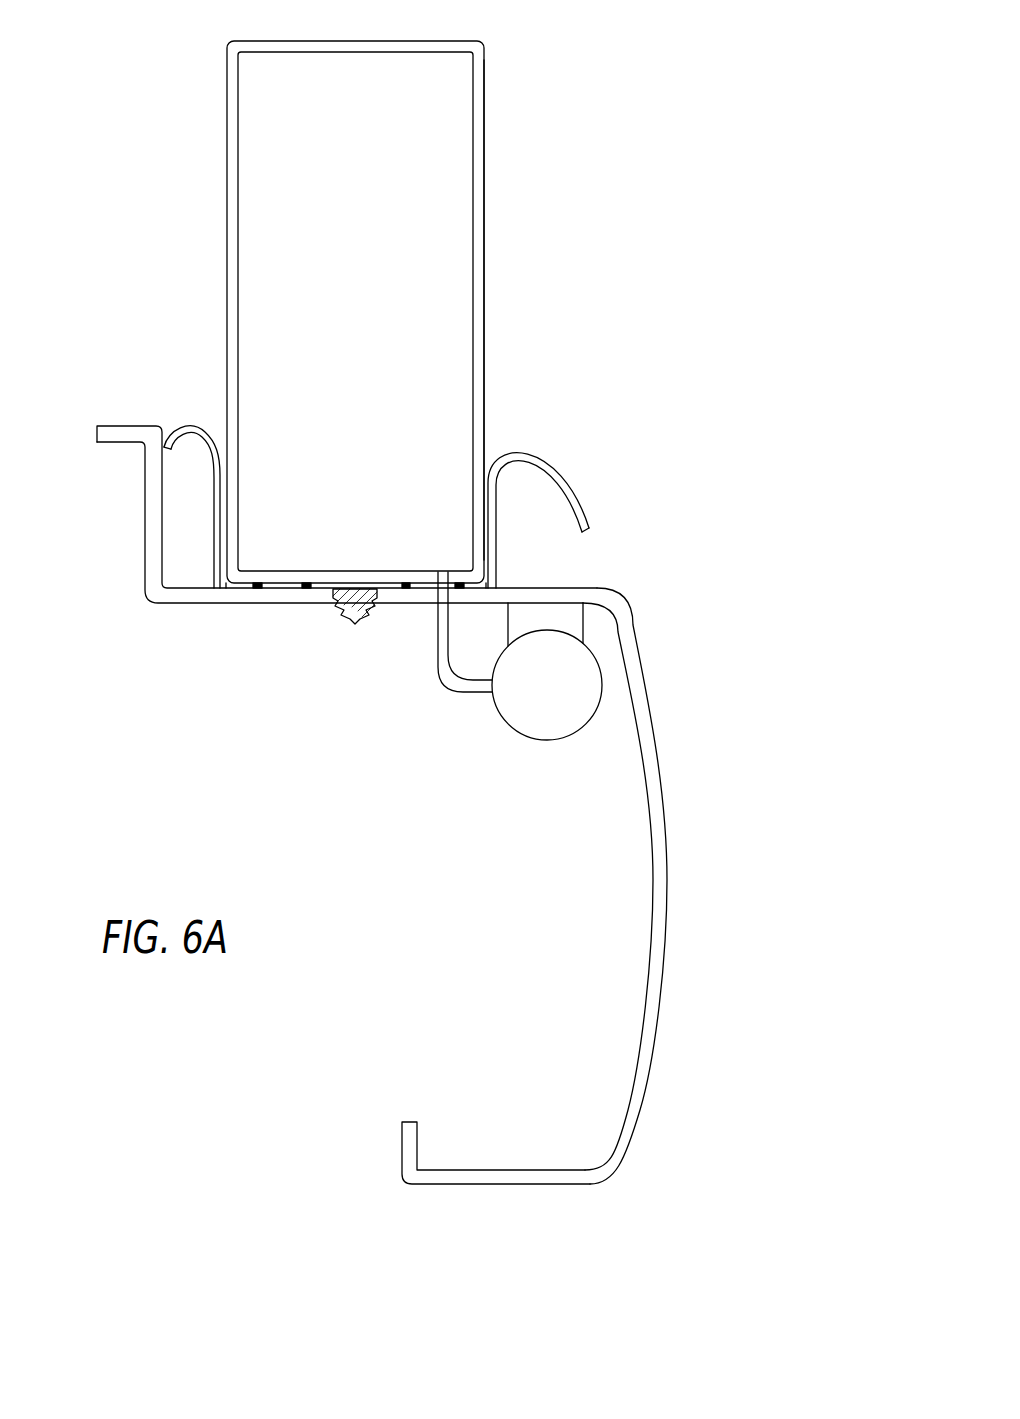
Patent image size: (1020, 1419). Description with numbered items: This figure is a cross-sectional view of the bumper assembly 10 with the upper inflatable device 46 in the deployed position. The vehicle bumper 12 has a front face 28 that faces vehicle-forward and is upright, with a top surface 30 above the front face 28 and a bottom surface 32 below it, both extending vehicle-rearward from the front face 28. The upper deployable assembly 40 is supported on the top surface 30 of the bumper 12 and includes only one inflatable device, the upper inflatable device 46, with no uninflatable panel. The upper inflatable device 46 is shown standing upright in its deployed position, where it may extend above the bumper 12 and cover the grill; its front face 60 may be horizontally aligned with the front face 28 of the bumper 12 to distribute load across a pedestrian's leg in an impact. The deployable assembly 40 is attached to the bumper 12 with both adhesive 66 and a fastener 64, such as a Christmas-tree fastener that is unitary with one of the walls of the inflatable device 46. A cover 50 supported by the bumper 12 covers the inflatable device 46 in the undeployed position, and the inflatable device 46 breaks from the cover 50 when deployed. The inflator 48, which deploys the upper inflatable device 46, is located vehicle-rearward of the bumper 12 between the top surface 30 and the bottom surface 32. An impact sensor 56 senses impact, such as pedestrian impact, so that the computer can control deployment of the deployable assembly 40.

The bumper assembly 10 is at (726, 263).
The vehicle bumper 12 is at (570, 928).
The front face 28 is at (665, 808).
The top surface 30 is at (560, 588).
The bottom surface 32 is at (498, 1185).
The upper deployable assembly 40 is at (365, 312).
The upper inflatable device 46 is at (402, 312).
The inflator 48 is at (543, 740).
The cover 50 is at (582, 510).
The impact sensor 56 is at (432, 237).
The front face 60 is at (484, 136).
The fastener 64 is at (355, 627).
The adhesive 66 is at (237, 583).